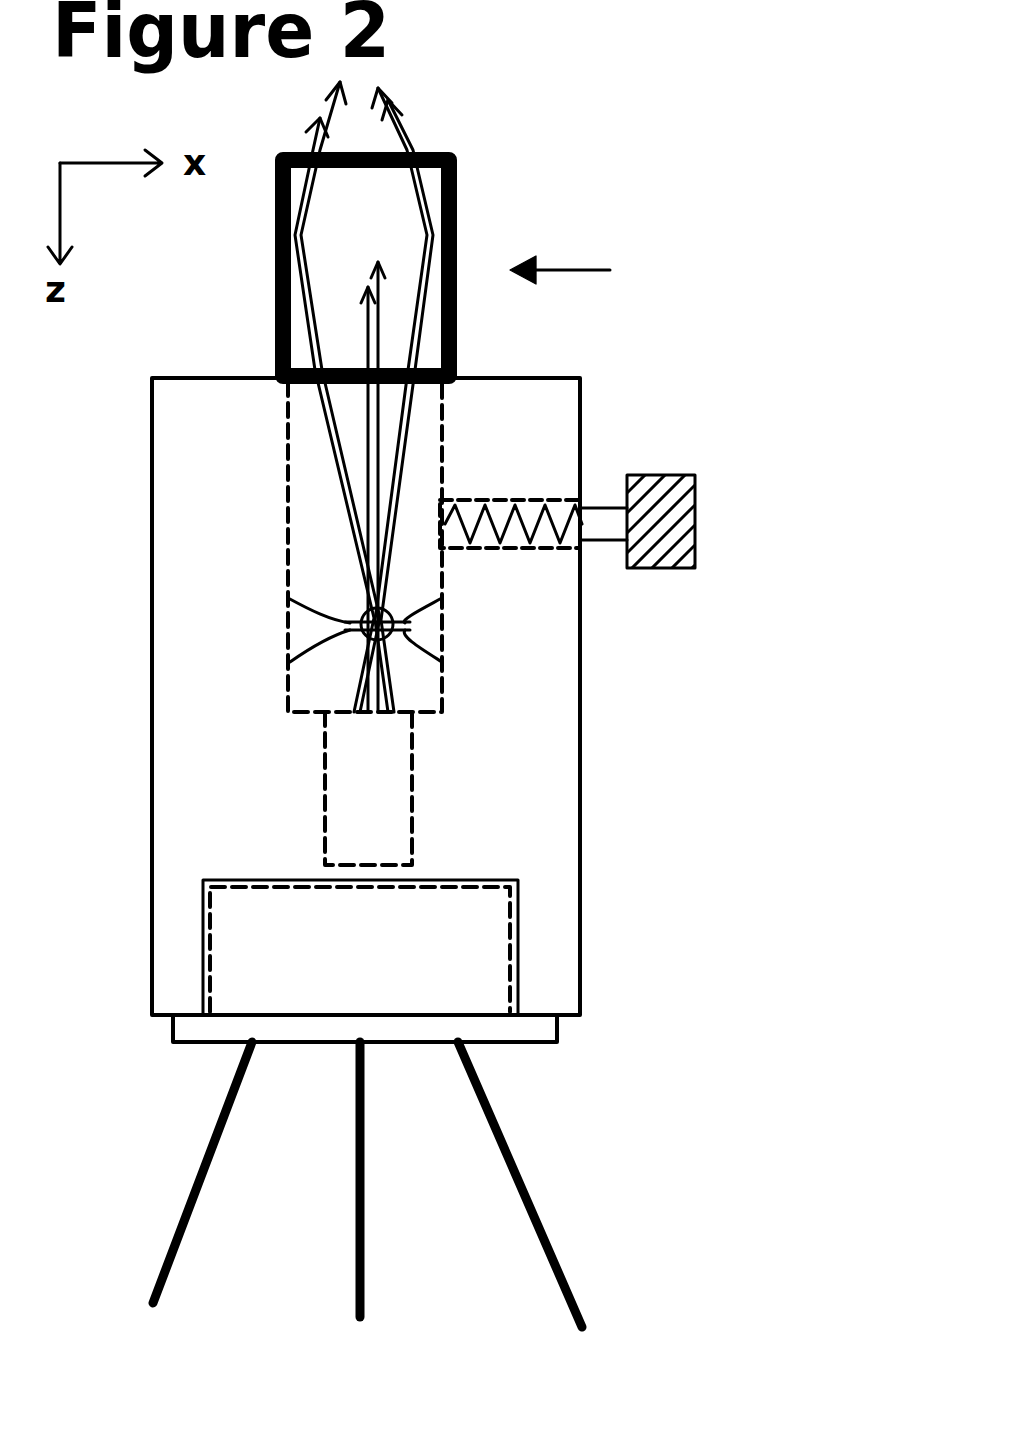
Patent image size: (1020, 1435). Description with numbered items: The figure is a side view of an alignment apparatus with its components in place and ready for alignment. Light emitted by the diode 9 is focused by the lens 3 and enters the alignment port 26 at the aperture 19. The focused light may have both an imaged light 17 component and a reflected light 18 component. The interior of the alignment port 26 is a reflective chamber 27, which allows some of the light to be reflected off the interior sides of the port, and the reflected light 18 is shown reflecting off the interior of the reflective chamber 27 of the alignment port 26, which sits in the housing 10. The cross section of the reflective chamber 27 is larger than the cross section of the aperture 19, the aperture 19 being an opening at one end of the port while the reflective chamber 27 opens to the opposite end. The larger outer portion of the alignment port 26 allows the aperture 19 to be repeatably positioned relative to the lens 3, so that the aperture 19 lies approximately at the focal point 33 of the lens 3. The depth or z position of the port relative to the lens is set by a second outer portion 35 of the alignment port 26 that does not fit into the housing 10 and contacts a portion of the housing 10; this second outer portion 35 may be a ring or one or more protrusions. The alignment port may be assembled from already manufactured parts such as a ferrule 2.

The ferrule 2 is at (442, 580).
The lens 3 is at (390, 780).
The diode 9 is at (465, 938).
The housing 10 is at (568, 710).
The imaged light 17 is at (457, 337).
The reflected light 18 is at (412, 426).
The aperture 19 is at (442, 668).
The alignment port 26 is at (604, 271).
The reflective chamber 27 is at (325, 544).
The focal point 33 is at (292, 662).
The second outer portion 35 is at (457, 190).